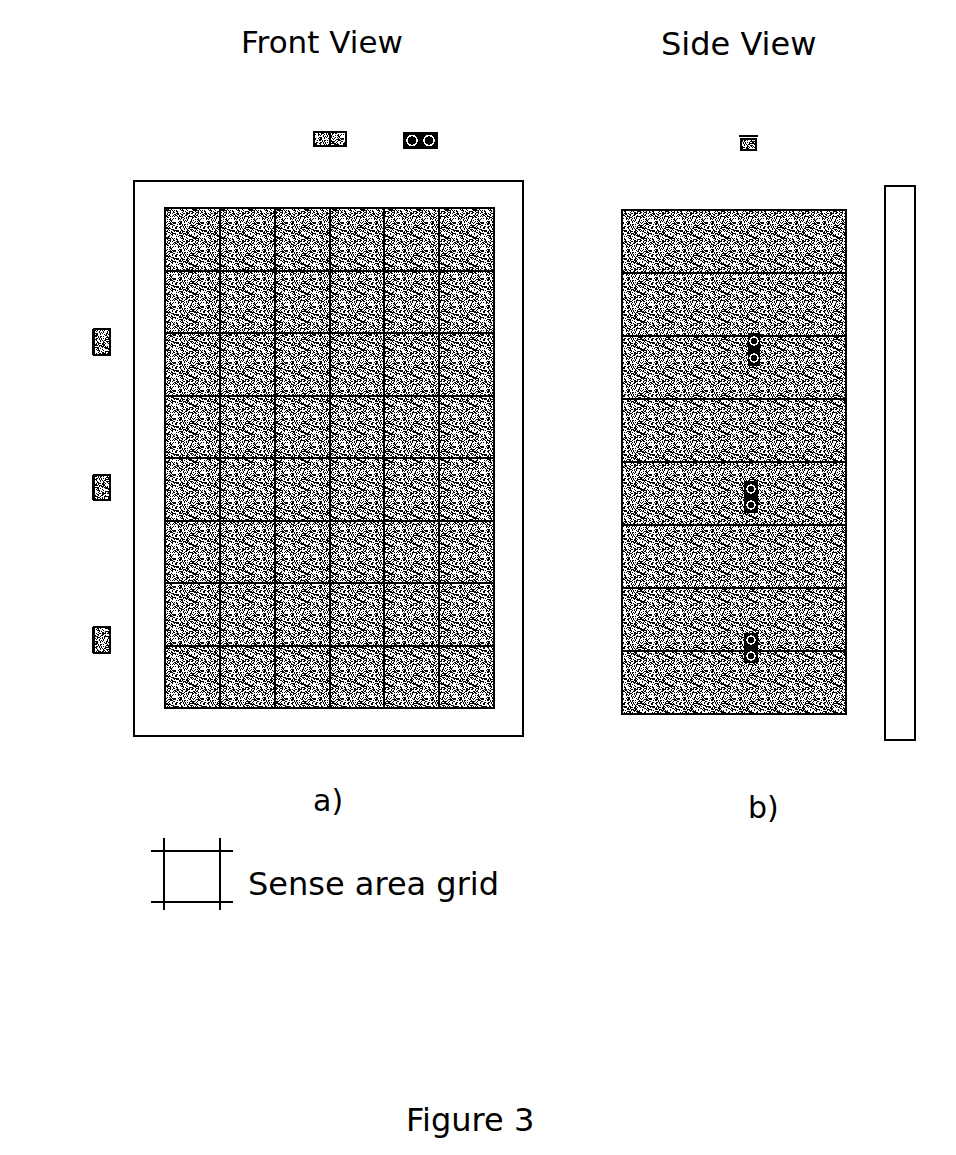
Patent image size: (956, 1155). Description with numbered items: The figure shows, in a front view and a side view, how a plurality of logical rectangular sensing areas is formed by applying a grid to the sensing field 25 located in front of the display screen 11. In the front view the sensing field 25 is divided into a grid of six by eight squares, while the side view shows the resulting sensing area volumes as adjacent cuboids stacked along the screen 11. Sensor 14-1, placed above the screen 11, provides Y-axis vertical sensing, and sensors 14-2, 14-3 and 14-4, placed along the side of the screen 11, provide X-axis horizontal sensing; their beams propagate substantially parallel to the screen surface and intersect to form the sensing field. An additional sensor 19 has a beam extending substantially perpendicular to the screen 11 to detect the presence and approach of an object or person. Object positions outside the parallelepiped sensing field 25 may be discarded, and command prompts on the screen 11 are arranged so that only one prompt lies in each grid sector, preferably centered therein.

In FIG. 3a, the display screen 11 is at (332, 445).
In FIG. 3b, the display screen 11 is at (903, 448).
In FIG. 3a, the sensing field 25 is at (329, 444).
In FIG. 3b, the sensing field 25 is at (734, 448).
In FIG. 3a, the additional sensor 19 is at (422, 119).
In FIG. 3a, the sensor 14-1 is at (314, 118).
In FIG. 3b, the sensor 14-1 is at (731, 120).
In FIG. 3a, the sensor 14-2 is at (73, 310).
In FIG. 3b, the sensor 14-2 is at (721, 351).
In FIG. 3a, the sensor 14-3 is at (73, 466).
In FIG. 3b, the sensor 14-3 is at (718, 497).
In FIG. 3a, the sensor 14-4 is at (77, 621).
In FIG. 3b, the sensor 14-4 is at (717, 643).